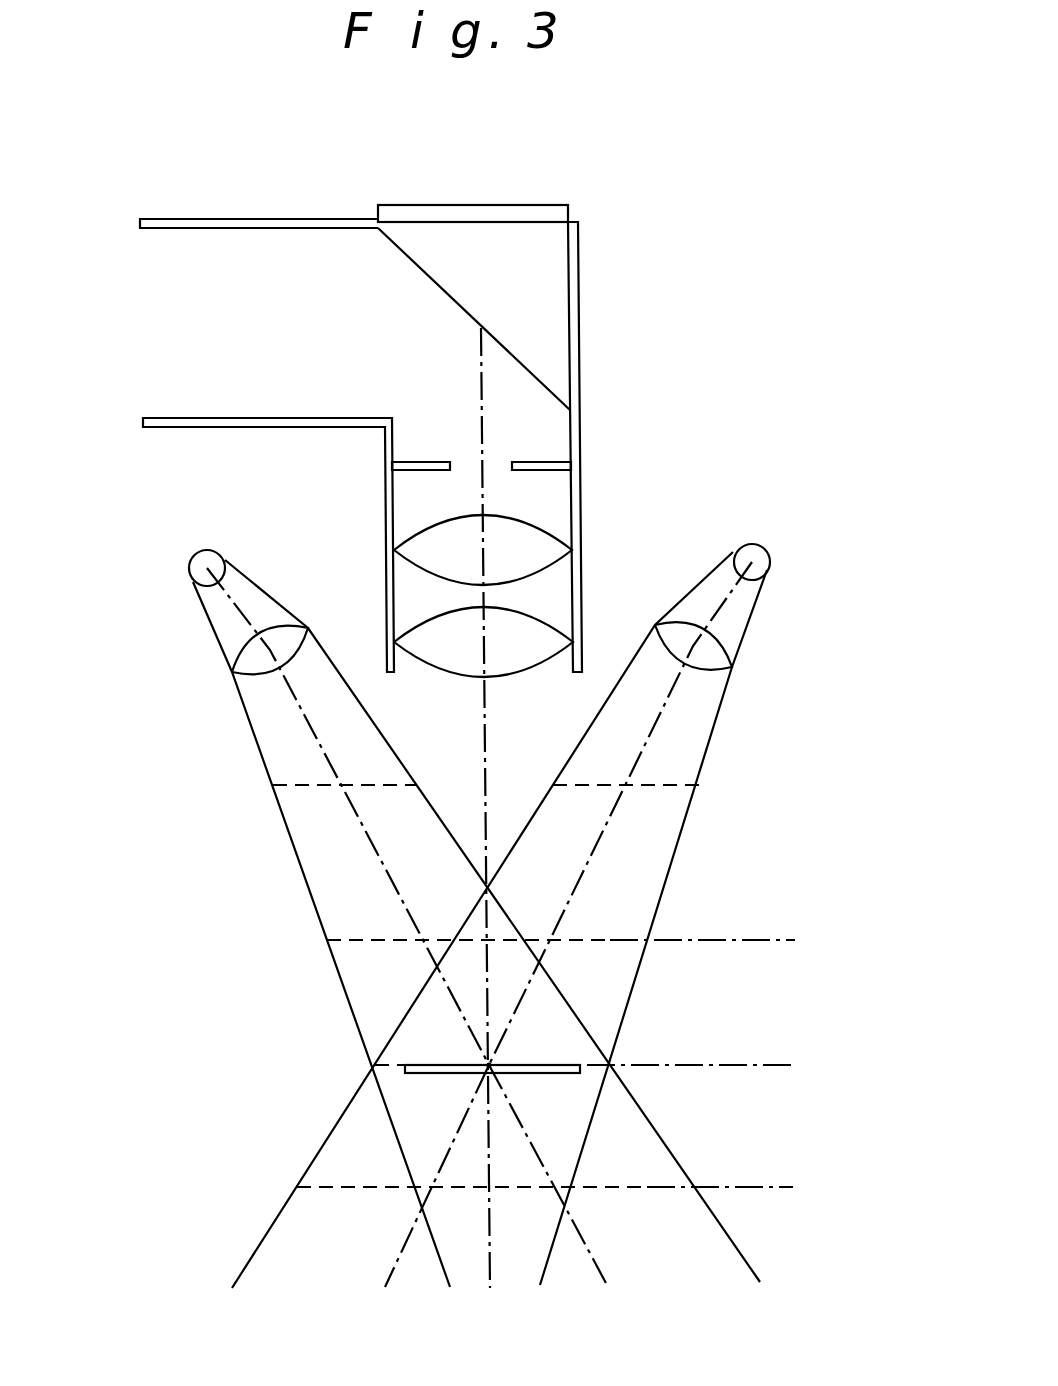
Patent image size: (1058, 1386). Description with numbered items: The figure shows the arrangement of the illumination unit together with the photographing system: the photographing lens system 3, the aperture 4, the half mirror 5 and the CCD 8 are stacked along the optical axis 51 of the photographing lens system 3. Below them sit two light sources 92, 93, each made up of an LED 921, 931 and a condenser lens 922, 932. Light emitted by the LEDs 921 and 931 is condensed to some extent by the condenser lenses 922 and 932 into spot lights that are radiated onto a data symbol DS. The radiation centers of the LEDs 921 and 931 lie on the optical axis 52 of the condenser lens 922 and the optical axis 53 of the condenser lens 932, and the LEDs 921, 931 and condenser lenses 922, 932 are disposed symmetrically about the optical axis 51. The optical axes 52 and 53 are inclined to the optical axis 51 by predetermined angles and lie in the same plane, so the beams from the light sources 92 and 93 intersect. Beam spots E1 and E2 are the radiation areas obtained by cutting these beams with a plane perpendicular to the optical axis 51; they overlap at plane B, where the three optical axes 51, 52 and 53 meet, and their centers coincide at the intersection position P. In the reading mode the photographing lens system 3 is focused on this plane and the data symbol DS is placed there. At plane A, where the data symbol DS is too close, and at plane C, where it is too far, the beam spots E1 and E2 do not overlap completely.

The CCD 8 is at (563, 204).
The half mirror 5 is at (528, 368).
The optical axis of the photographing lens system 51 is at (483, 443).
The aperture 4 is at (415, 462).
The photographing lens system 3 is at (588, 590).
The light source 93 is at (430, 887).
The LED 931 is at (190, 556).
The condenser lens 932 is at (230, 673).
The optical axis of the condenser lens 932 53 is at (292, 700).
The light source 92 is at (567, 887).
The LED 921 is at (760, 542).
The condenser lens 922 is at (717, 670).
The optical axis of the condenser lens 922 52 is at (645, 747).
The plane A is at (599, 936).
The plane B is at (623, 1061).
The plane C is at (585, 1181).
The data symbol DS is at (580, 1072).
The intersection position P is at (489, 1065).
The beam spot E1 is at (640, 785).
The beam spot E2 is at (710, 1158).